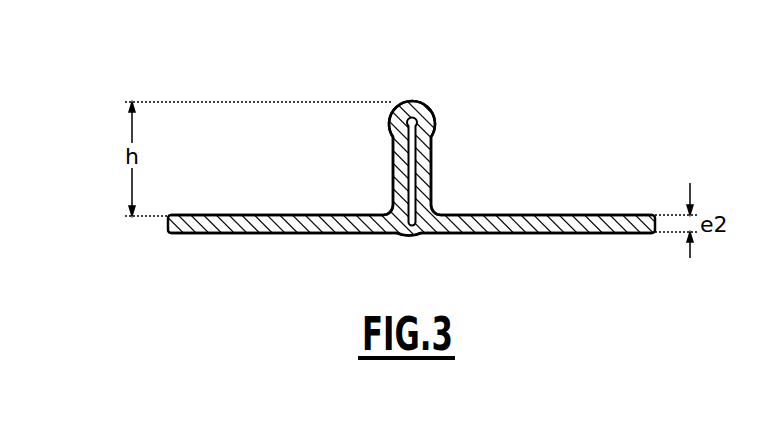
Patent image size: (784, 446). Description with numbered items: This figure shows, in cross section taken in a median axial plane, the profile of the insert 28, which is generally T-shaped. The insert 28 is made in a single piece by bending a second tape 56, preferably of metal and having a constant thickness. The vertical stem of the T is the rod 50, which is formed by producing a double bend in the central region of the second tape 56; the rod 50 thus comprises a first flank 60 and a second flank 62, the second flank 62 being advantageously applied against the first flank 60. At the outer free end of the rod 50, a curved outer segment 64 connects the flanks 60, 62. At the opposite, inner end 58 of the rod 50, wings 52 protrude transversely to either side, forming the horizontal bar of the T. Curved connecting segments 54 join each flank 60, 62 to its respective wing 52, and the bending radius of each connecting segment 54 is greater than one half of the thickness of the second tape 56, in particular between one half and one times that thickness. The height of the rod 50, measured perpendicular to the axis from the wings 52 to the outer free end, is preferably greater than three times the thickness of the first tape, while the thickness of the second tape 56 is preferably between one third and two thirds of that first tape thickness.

The insert 28 is at (507, 92).
The rod 50 is at (387, 93).
The wings 52 is at (262, 221).
The curved connecting segments 54 is at (390, 209).
The second tape 56 is at (612, 214).
The inner end of the rod 58 is at (406, 226).
The first flank 60 is at (393, 151).
The second flank 62 is at (431, 151).
The curved outer segment 64 is at (410, 100).